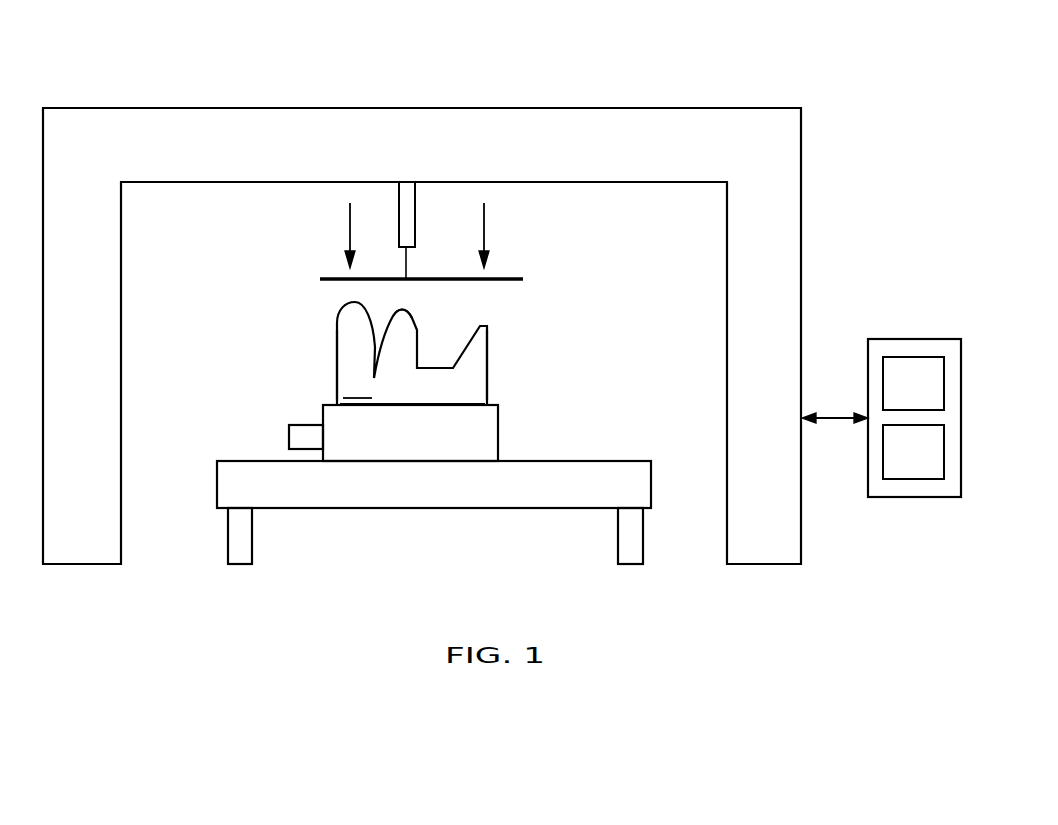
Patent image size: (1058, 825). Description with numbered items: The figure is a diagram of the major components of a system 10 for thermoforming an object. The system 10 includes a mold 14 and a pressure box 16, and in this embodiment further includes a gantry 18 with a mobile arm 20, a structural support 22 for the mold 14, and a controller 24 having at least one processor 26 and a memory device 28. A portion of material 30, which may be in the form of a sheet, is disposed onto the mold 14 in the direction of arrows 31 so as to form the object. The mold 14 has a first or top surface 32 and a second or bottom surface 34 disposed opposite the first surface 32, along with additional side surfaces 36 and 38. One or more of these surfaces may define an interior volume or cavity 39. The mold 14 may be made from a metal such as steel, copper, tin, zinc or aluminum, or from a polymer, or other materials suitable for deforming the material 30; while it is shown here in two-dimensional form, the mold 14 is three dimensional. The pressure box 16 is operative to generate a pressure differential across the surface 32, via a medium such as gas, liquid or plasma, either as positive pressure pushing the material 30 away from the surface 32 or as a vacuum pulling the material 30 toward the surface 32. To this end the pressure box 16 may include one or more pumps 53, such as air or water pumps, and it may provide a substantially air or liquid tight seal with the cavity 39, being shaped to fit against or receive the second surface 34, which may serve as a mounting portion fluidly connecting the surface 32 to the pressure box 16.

The system 10 is at (760, 57).
The mold 14 is at (411, 333).
The pressure box 16 is at (498, 432).
The gantry 18 is at (420, 108).
The mobile arm 20 is at (415, 200).
The structural support 22 is at (651, 483).
The controller 24 is at (881, 387).
The processor 26 is at (925, 395).
The memory device 28 is at (925, 464).
The material 30 is at (505, 279).
The arrows 31 is at (345, 220).
The first surface 32 is at (413, 315).
The second surface 34 is at (427, 404).
The side surface 36 is at (337, 360).
The side surface 38 is at (488, 365).
The cavity 39 is at (357, 387).
The pump 53 is at (289, 435).